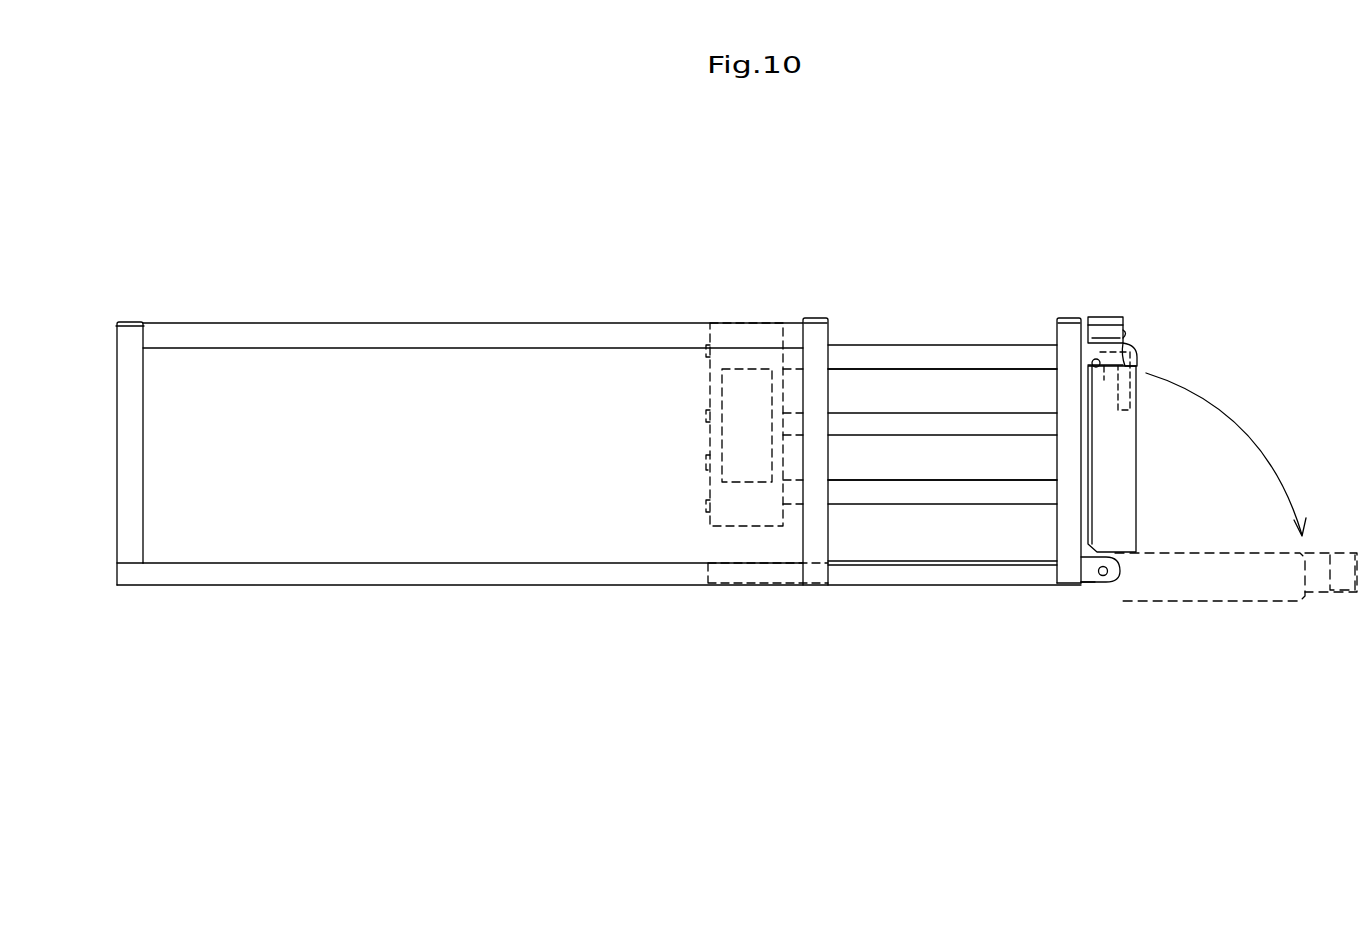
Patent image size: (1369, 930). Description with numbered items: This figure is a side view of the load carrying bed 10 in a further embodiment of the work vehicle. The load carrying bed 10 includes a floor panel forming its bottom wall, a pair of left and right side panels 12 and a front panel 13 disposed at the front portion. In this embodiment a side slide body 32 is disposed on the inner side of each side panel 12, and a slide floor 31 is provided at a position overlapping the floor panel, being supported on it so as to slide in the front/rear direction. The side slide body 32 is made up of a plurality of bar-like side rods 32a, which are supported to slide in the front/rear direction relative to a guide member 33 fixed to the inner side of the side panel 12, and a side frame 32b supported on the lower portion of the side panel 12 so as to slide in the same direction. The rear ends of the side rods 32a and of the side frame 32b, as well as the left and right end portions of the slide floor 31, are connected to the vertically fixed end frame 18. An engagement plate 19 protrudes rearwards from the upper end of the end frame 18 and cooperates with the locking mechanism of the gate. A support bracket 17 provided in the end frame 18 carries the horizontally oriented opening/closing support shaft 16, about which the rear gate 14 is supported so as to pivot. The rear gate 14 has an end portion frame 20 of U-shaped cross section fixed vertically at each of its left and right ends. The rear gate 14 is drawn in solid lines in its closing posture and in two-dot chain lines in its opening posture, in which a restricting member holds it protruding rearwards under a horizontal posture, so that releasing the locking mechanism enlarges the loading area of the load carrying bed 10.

The load carrying bed 10 is at (343, 280).
The side panel 12 is at (437, 380).
The front panel 13 is at (131, 337).
The rear gate 14 is at (1108, 317).
The opening/closing support shaft 16 is at (1106, 585).
The support bracket 17 is at (1090, 580).
The end frame 18 is at (1070, 335).
The engagement plate 19 is at (1137, 358).
The end portion frame 20 is at (1122, 486).
The slide floor 31 is at (925, 560).
The side slide body 32 is at (882, 342).
The side rod 32a is at (965, 430).
The side frame 32b is at (930, 573).
The guide member 33 is at (710, 460).